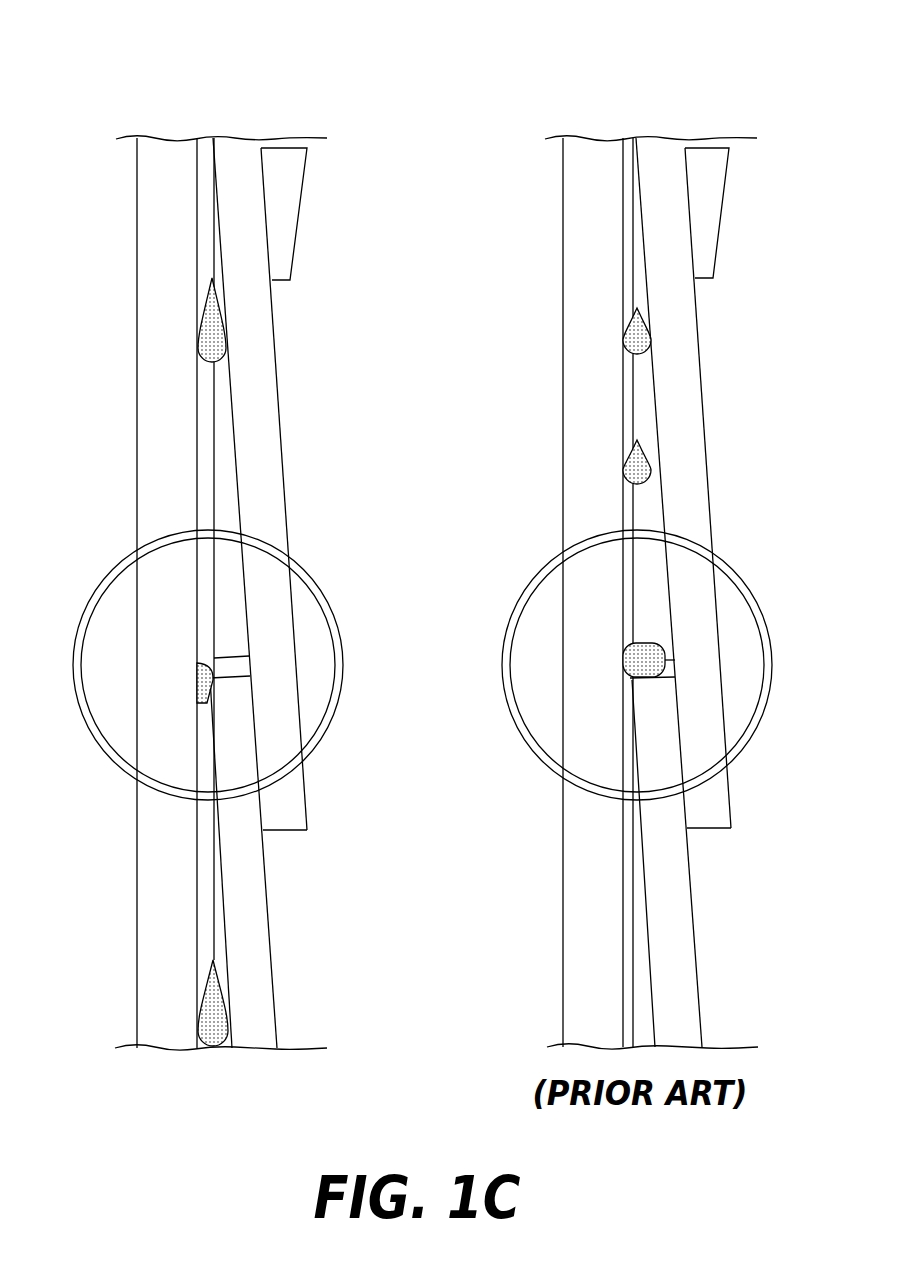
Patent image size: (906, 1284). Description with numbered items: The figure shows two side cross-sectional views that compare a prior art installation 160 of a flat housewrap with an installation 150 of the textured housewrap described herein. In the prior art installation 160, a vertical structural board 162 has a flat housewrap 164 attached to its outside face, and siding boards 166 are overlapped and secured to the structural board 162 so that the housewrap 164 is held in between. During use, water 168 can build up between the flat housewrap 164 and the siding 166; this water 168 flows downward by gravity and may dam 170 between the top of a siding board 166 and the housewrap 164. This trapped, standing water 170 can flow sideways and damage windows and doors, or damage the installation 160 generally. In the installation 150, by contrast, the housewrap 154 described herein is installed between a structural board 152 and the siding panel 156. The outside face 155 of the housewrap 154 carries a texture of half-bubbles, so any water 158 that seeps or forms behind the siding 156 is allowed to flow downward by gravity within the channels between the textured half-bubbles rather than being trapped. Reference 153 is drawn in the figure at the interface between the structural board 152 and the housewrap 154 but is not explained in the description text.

The installation 150 is at (250, 102).
The structural board 152 is at (165, 450).
The substrate interface layer 153 is at (193, 503).
The housewrap 154 is at (207, 422).
The outside face 155 is at (217, 510).
The siding panel 156 is at (282, 452).
The water 158 is at (200, 338).
The installation 160 is at (703, 93).
The vertical structural board 162 is at (595, 217).
The flat housewrap 164 is at (628, 400).
The siding boards 166 is at (710, 507).
The water 168 is at (627, 463).
The dam 170 is at (623, 653).